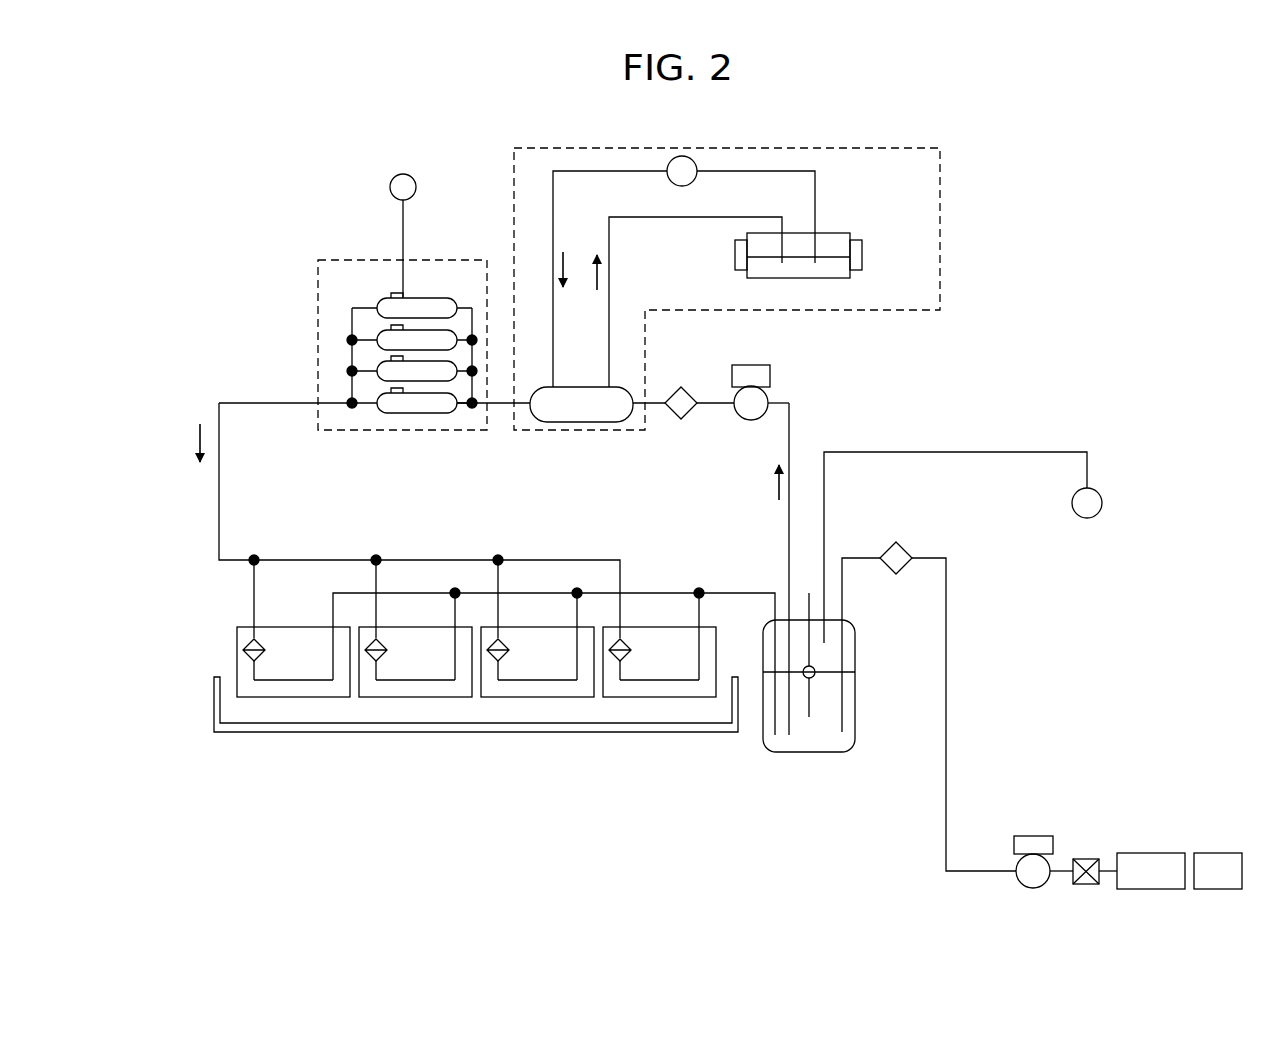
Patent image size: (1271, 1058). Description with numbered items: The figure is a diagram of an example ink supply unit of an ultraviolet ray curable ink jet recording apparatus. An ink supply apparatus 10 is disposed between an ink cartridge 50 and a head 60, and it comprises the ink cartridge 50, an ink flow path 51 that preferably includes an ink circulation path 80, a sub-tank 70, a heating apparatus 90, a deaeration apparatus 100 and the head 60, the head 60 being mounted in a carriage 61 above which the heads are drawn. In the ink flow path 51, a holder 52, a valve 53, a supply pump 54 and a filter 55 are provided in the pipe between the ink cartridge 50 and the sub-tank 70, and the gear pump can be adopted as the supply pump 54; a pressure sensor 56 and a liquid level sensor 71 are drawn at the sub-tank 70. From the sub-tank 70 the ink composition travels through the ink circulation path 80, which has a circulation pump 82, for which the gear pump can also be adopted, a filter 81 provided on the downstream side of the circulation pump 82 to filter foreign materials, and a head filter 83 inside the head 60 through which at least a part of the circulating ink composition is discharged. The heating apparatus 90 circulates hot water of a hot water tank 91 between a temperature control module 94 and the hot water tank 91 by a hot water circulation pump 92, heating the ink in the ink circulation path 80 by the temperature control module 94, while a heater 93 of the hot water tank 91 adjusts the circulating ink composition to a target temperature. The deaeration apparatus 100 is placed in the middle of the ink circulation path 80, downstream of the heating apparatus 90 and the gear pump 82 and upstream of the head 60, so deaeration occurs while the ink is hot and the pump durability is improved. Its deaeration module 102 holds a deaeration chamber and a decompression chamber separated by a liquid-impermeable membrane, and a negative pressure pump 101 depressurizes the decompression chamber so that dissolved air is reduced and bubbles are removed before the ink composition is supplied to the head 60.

The ink supply apparatus 10 is at (733, 120).
The ink cartridge 50 is at (1212, 852).
The ink flow path 51 is at (947, 663).
The holder 52 is at (1147, 852).
The valve 53 is at (1087, 858).
The supply pump 54 is at (1030, 837).
The filter 55 is at (901, 545).
The pressure sensor 56 is at (1102, 503).
The head 60 is at (293, 687).
The carriage 61 is at (253, 733).
The sub-tank 70 is at (856, 702).
The liquid level sensor 71 is at (808, 717).
The ink circulation path 80 is at (791, 417).
The filter 81 is at (683, 392).
The circulation pump 82 is at (771, 376).
The head filter 83 is at (241, 655).
The heating apparatus 90 is at (944, 312).
The hot water tank 91 is at (838, 243).
The hot water circulation pump 92 is at (694, 181).
The heater 93 is at (735, 254).
The temperature control module 94 is at (578, 418).
The deaeration apparatus 100 is at (318, 257).
The negative pressure pump 101 is at (416, 184).
The deaeration module 102 is at (400, 410).